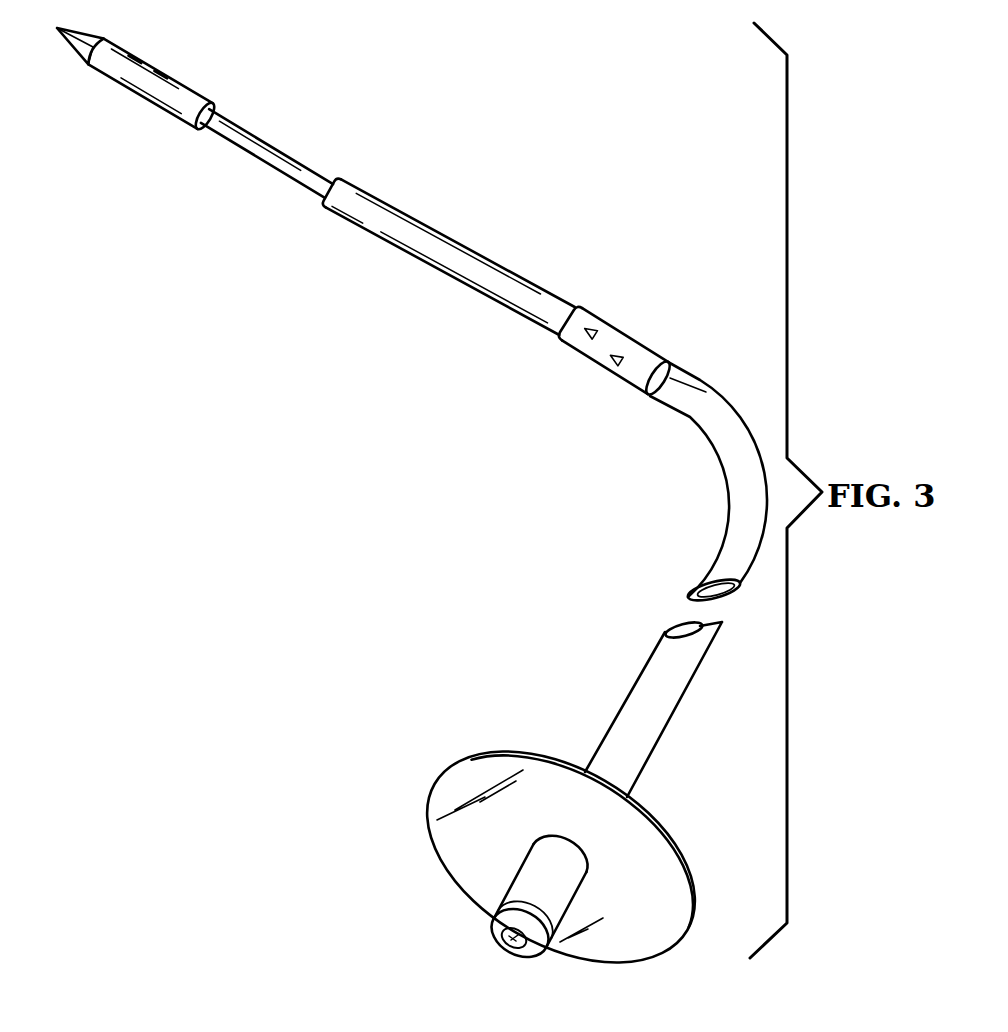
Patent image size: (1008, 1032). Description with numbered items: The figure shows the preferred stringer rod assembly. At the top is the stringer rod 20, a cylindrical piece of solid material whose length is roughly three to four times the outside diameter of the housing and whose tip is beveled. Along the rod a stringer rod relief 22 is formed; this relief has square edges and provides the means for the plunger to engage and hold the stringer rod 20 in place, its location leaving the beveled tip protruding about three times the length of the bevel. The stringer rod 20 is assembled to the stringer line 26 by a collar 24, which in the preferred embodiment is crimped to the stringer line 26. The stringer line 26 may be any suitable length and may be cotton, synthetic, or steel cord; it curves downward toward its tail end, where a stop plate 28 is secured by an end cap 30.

The tube 20 is at (437, 273).
The stylet with needle tip 22 is at (297, 158).
The marker ring 24 is at (624, 333).
The curved catheter tube 26 is at (727, 518).
The disc 28 is at (432, 833).
The hub 30 is at (492, 922).